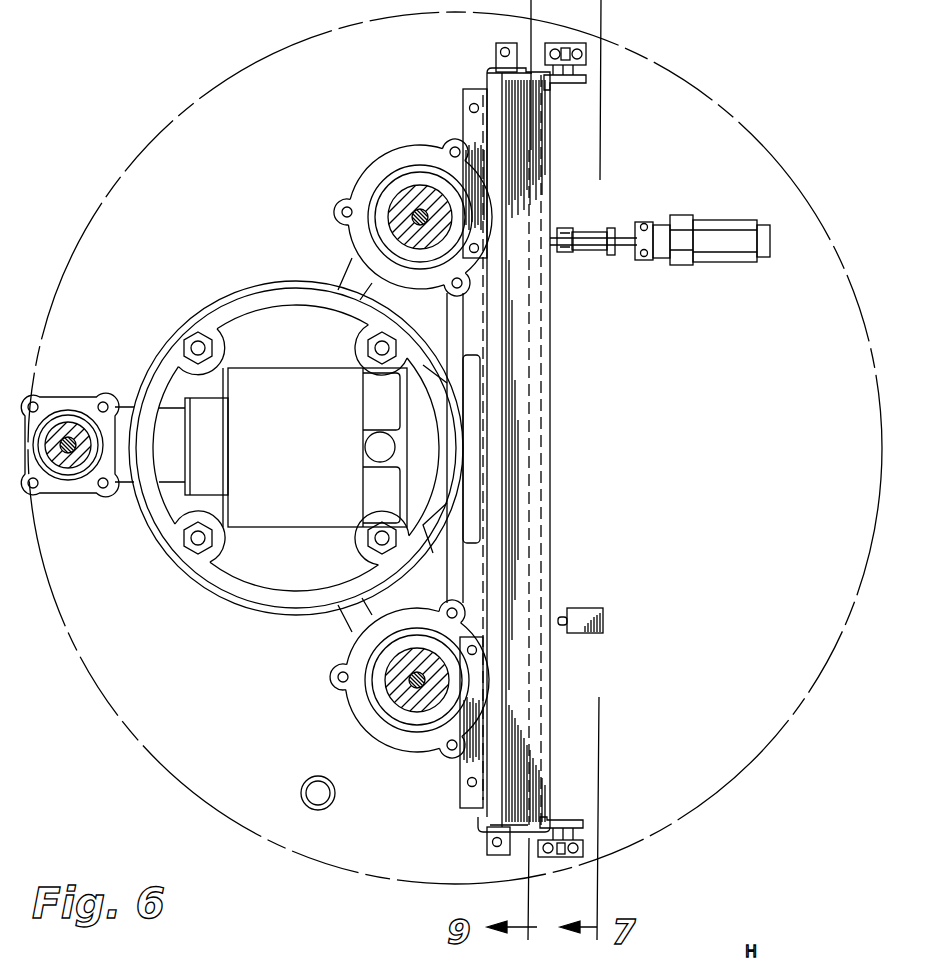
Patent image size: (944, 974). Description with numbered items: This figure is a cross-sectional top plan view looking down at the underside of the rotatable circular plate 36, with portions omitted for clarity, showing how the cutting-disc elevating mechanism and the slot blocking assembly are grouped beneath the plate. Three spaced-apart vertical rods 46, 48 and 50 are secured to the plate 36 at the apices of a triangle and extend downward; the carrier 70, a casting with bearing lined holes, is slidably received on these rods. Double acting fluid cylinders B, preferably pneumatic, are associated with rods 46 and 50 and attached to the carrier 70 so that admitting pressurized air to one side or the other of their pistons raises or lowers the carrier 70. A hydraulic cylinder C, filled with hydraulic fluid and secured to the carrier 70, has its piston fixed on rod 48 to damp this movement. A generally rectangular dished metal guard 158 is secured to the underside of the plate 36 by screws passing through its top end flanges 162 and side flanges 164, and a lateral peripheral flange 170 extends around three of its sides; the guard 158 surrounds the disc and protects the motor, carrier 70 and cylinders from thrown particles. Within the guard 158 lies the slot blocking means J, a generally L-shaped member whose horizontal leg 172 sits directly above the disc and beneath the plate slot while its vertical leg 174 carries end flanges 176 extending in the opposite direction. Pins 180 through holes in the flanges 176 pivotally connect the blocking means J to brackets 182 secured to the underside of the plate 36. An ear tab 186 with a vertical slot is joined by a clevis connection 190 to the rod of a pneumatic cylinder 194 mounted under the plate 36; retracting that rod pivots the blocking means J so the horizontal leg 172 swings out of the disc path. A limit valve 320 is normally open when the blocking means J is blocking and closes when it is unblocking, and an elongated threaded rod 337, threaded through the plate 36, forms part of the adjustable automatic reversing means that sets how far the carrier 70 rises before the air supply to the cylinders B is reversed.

The circular plate 36 is at (797, 706).
The vertical rod 46 is at (408, 192).
The vertical rod 48 is at (70, 470).
The vertical rod 50 is at (395, 665).
The carrier 70 is at (259, 290).
The guard 158 is at (487, 78).
The end flanges 162 is at (496, 46).
The side flanges 164 is at (463, 118).
The lateral peripheral flange 170 is at (514, 690).
The horizontal leg 172 is at (518, 518).
The vertical leg 174 is at (545, 572).
The end flanges 176 is at (590, 80).
The pins 180 is at (568, 88).
The brackets 182 is at (587, 53).
The ear tab 186 is at (575, 238).
The clevis connection 190 is at (592, 252).
The pneumatic cylinder 194 is at (726, 258).
The limit valve 320 is at (604, 618).
The threaded rod 337 is at (301, 792).
The fluid cylinders B is at (355, 176).
The hydraulic cylinder C is at (75, 403).
The slot blocking means J is at (549, 382).